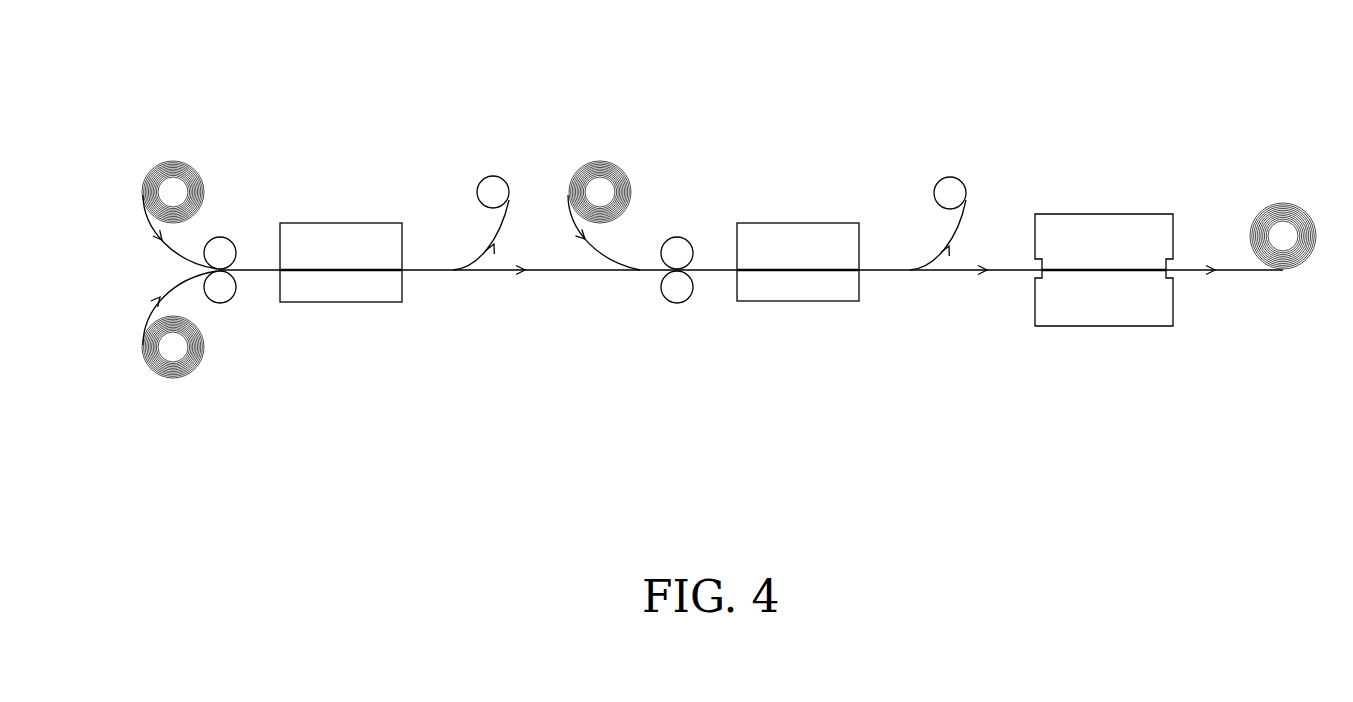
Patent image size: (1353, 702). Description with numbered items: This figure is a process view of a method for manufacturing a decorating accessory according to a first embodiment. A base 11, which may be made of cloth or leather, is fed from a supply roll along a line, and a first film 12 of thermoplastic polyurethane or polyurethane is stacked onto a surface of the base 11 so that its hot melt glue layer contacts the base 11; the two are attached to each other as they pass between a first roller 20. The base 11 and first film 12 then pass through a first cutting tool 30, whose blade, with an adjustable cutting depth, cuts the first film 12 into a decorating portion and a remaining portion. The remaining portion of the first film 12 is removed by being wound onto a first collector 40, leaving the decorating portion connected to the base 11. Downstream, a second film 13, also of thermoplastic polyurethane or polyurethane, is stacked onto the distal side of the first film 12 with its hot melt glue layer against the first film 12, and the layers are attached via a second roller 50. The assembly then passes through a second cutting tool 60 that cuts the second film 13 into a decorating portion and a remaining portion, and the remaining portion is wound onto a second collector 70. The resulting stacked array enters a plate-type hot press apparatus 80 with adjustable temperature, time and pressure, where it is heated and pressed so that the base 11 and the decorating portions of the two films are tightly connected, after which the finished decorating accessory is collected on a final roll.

The base 11 is at (172, 378).
The first film 12 is at (190, 135).
The second film 13 is at (609, 139).
The first roller 20 is at (254, 316).
The first cutting tool 30 is at (340, 185).
The first collector 40 is at (479, 154).
The second roller 50 is at (674, 329).
The second cutting tool 60 is at (794, 199).
The second collector 70 is at (960, 142).
The hot press apparatus 80 is at (1104, 179).